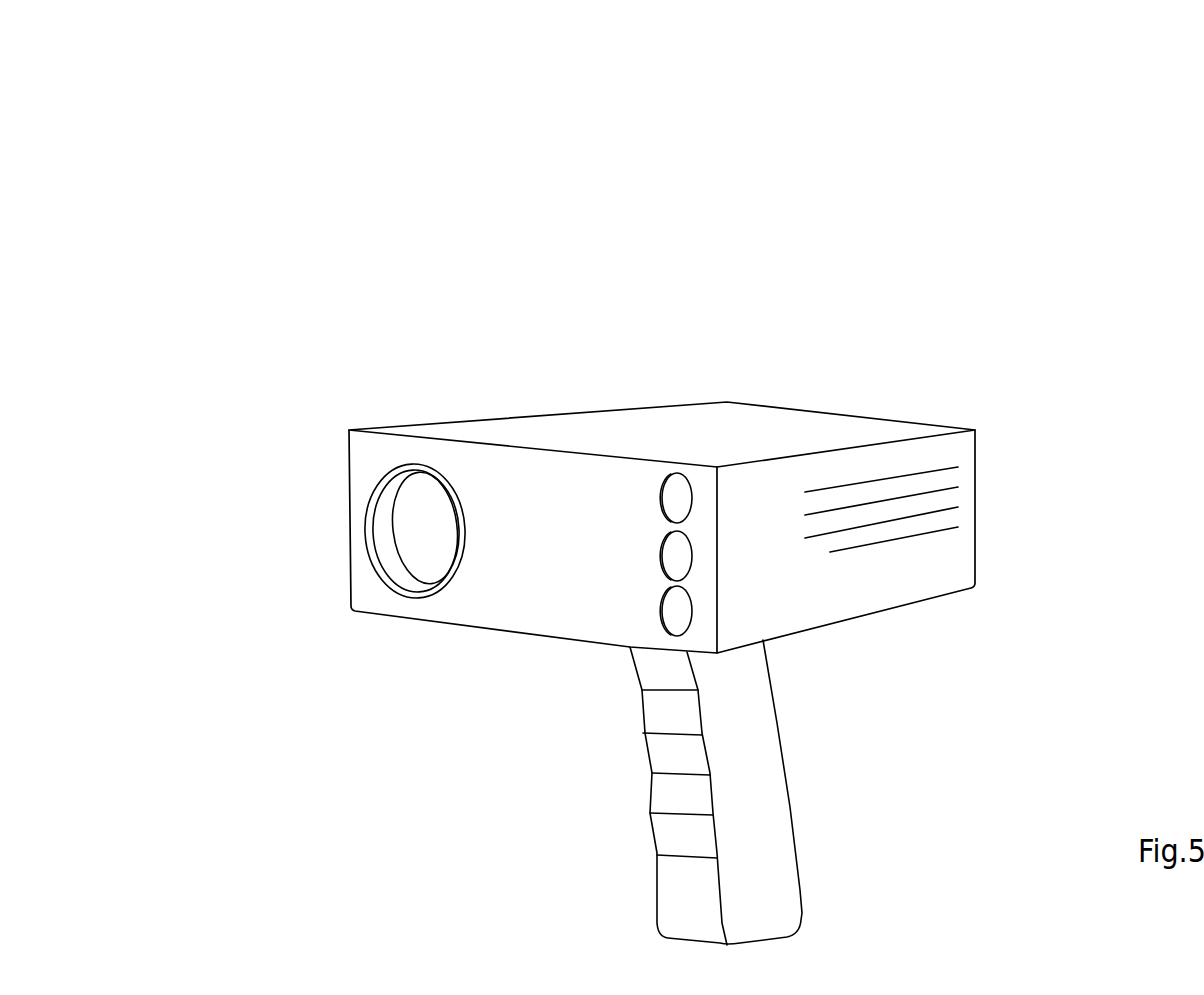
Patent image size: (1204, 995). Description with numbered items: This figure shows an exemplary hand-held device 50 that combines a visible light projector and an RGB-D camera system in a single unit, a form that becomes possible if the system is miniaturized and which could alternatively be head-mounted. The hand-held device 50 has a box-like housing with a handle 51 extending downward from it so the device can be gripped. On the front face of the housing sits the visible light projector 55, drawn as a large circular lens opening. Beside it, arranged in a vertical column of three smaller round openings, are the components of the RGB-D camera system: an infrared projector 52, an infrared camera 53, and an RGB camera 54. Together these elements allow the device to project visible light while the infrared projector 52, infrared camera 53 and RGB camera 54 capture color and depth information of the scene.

The hand-held device 50 is at (662, 507).
The handle 51 is at (750, 812).
The infrared projector 52 is at (673, 500).
The infrared camera 53 is at (677, 556).
The RGB camera 54 is at (675, 611).
The visible light projector 55 is at (418, 529).